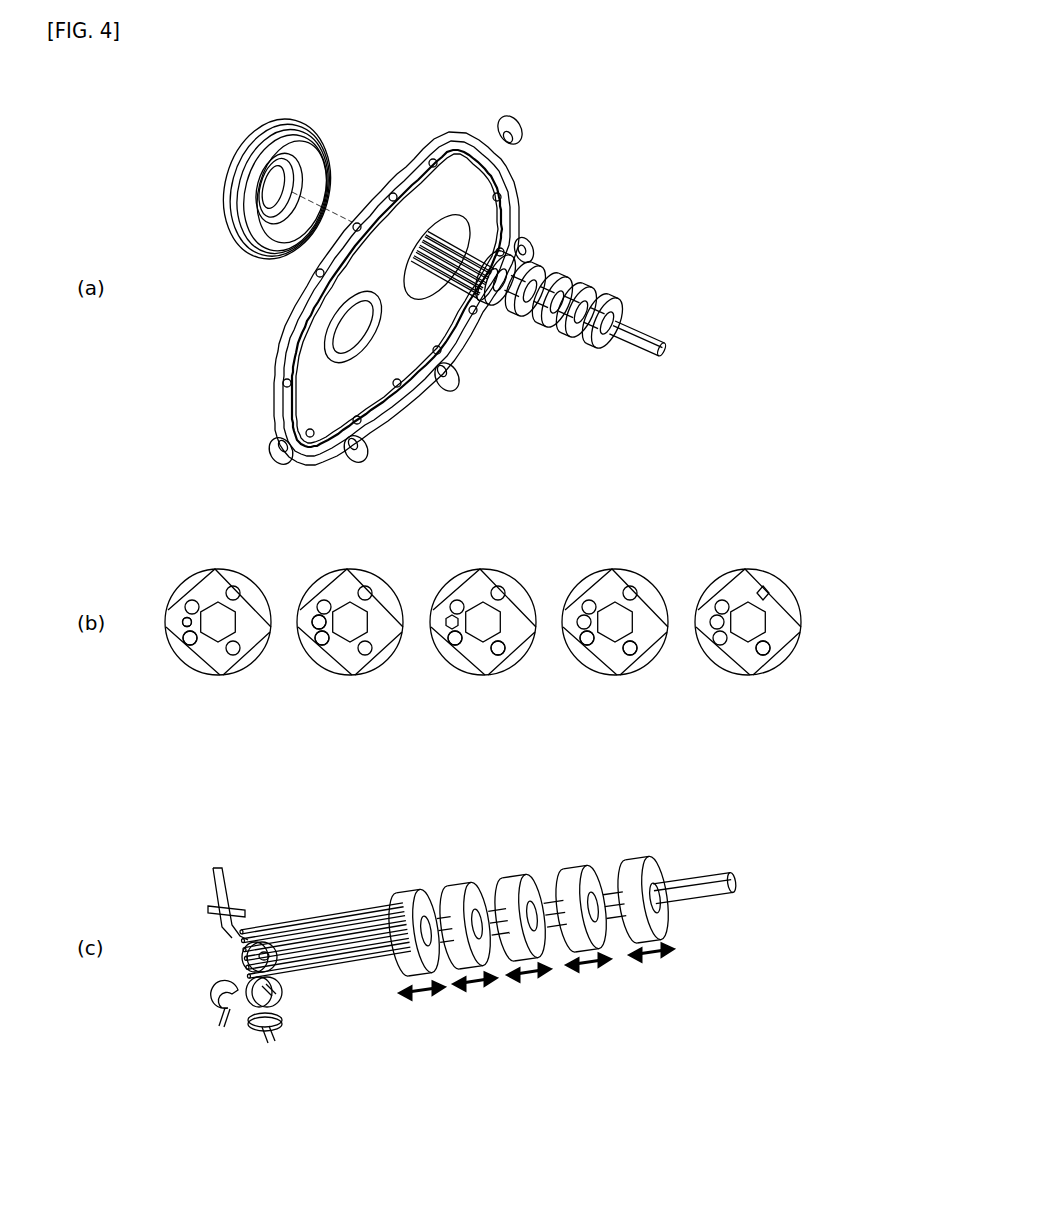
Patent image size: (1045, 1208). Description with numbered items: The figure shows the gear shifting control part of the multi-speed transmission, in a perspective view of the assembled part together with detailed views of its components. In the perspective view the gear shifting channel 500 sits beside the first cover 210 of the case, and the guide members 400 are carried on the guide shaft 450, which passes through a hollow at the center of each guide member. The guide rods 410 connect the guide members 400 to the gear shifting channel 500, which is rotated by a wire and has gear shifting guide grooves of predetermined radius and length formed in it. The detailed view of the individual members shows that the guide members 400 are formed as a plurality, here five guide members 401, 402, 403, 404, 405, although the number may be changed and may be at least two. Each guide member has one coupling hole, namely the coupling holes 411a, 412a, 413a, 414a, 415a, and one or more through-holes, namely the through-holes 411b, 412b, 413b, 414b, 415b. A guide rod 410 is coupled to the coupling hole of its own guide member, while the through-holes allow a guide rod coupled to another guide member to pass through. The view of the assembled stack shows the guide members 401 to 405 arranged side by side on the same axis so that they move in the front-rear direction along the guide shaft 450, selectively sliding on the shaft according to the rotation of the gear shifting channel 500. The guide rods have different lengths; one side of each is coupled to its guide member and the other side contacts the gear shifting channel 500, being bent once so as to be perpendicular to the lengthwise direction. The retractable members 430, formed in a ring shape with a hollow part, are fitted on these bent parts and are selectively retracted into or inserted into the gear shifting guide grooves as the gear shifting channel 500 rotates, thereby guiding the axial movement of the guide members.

The gear shifting channel 500 is at (242, 155).
The first cover 210 is at (440, 148).
The guide members 400 is at (563, 272).
The guide shaft 450 is at (640, 330).
The guide rod 410 is at (465, 290).
The guide member 401 is at (192, 567).
The guide member 402 is at (324, 567).
The guide member 403 is at (456, 567).
The guide member 404 is at (589, 567).
The guide member 405 is at (722, 567).
The coupling hole 411a is at (181, 618).
The through-hole 411b is at (205, 652).
The coupling hole 412a is at (314, 612).
The through-hole 412b is at (337, 655).
The coupling hole 413a is at (462, 646).
The through-hole 413b is at (490, 656).
The coupling hole 414a is at (597, 645).
The through-hole 414b is at (622, 656).
The coupling hole 415a is at (766, 588).
The through-hole 415b is at (758, 656).
The retractable member 430 is at (289, 994).